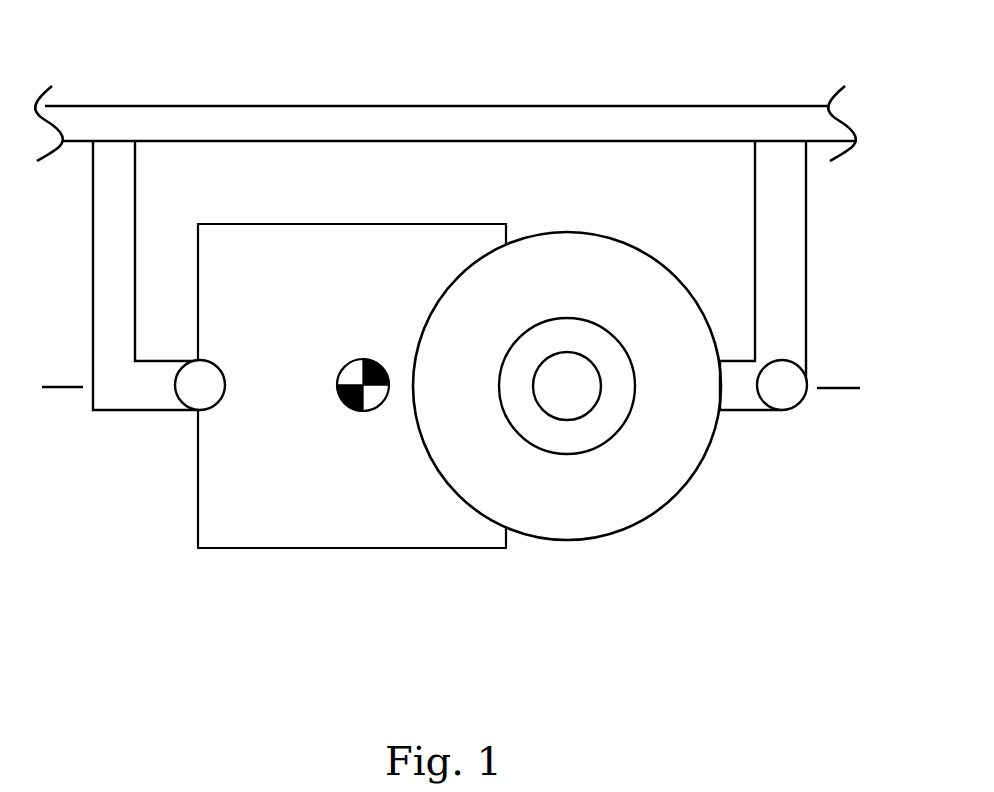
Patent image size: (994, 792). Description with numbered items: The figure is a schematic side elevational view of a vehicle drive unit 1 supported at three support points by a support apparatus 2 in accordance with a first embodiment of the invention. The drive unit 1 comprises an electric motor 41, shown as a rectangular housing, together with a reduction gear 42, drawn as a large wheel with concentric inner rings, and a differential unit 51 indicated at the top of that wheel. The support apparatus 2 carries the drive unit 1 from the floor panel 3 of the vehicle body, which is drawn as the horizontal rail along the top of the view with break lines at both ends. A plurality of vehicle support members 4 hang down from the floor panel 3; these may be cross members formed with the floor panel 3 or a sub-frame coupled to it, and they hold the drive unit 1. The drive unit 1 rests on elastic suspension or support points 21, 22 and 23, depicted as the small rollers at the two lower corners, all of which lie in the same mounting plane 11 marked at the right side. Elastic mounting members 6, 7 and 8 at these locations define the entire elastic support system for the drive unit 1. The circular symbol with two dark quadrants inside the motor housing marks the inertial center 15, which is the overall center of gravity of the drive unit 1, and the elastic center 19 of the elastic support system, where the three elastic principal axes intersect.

The vehicle drive unit 1 is at (424, 212).
The support apparatus 2 is at (737, 410).
The floor panel 3 is at (246, 106).
The vehicle support members 4 is at (137, 213).
The elastic mounting member 6 is at (160, 507).
The elastic mounting member 7 is at (200, 387).
The elastic mounting member 8 is at (780, 412).
The mounting plane 11 is at (843, 388).
The inertial center 15 is at (315, 362).
The elastic center 19 is at (363, 359).
The support point 21 is at (144, 437).
The support point 22 is at (198, 412).
The support point 23 is at (783, 387).
The electric motor 41 is at (246, 224).
The reduction gear 42 is at (636, 248).
The differential unit 51 is at (533, 240).